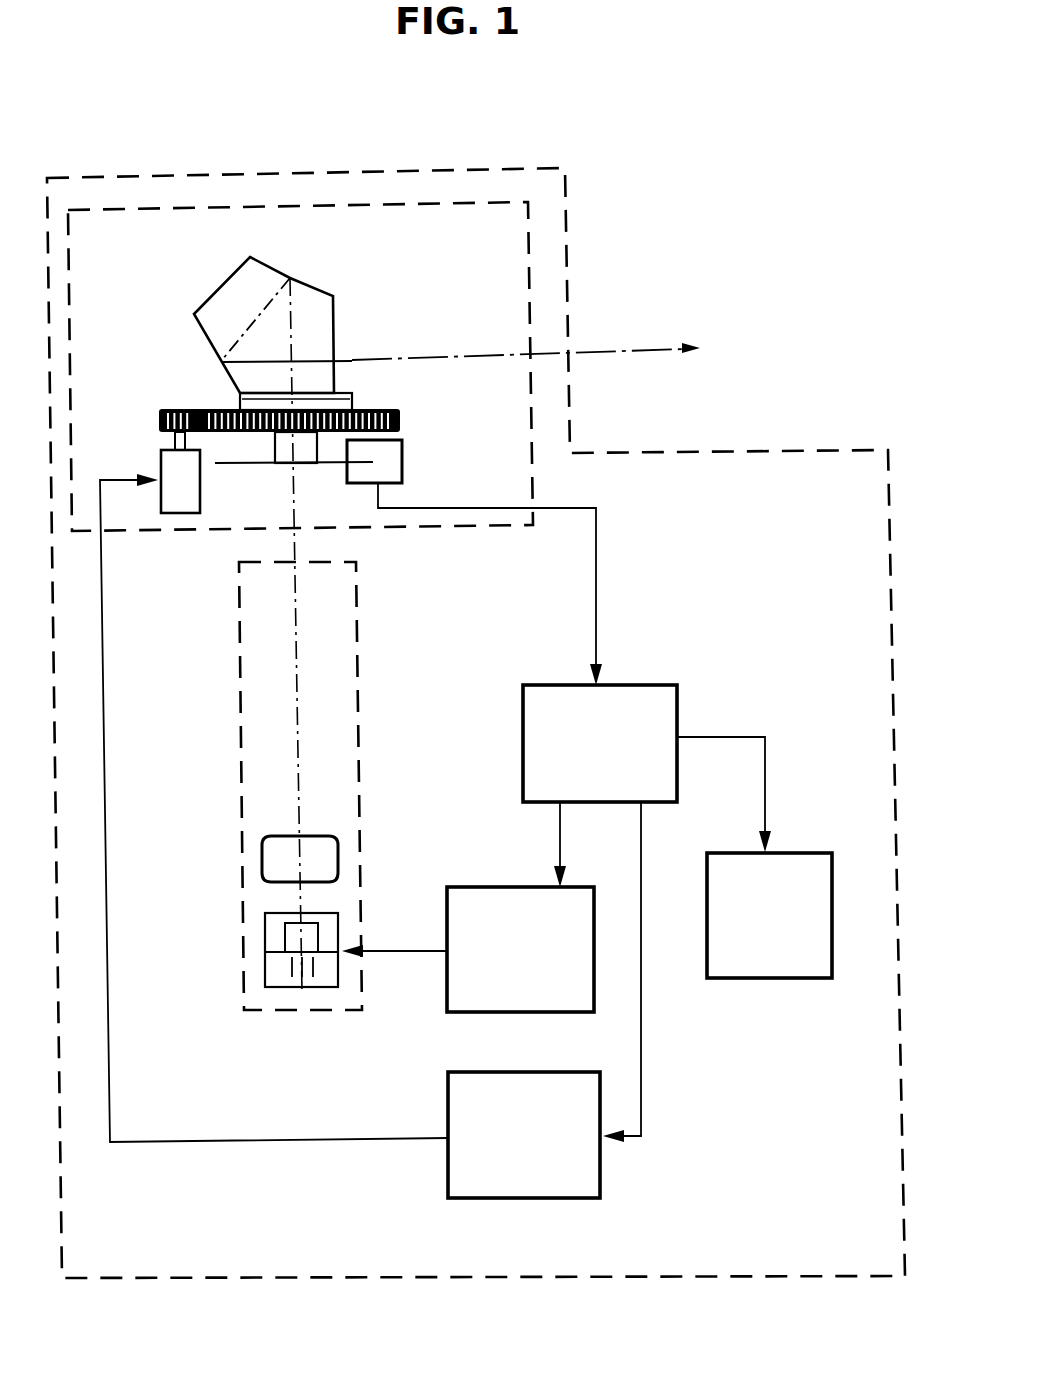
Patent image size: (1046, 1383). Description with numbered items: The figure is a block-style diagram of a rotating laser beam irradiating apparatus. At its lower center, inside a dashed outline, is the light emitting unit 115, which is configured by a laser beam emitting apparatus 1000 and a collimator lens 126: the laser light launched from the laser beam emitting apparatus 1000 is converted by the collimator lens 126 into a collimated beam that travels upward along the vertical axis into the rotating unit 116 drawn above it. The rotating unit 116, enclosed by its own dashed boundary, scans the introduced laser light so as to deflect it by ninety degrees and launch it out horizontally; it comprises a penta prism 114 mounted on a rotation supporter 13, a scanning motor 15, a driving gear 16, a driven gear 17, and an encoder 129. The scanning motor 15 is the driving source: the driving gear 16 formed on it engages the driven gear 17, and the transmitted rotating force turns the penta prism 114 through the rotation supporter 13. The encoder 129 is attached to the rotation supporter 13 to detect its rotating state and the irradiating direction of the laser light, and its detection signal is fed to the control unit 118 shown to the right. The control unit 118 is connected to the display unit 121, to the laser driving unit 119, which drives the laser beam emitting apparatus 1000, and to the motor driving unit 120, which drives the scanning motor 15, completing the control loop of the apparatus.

The rotation supporter 13 is at (245, 406).
The scanning motor 15 is at (162, 460).
The driving gear 16 is at (174, 413).
The driven gear 17 is at (402, 419).
The penta prism 114 is at (273, 270).
The light emitting unit 115 is at (242, 862).
The rotating unit 116 is at (478, 201).
The control unit 118 is at (640, 700).
The laser driving unit 119 is at (498, 897).
The motor driving unit 120 is at (466, 1078).
The display unit 121 is at (797, 851).
The collimator lens 126 is at (325, 862).
The encoder 129 is at (405, 468).
The laser beam emitting apparatus 1000 is at (282, 977).